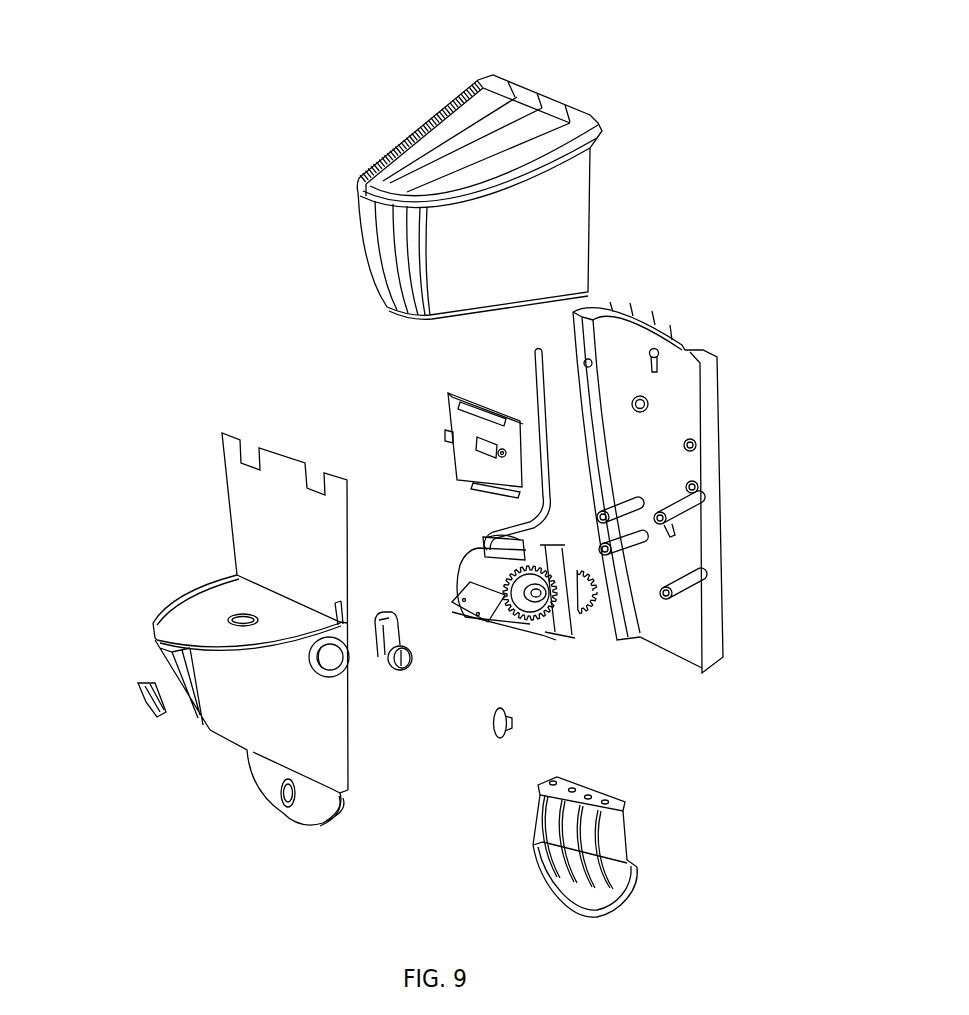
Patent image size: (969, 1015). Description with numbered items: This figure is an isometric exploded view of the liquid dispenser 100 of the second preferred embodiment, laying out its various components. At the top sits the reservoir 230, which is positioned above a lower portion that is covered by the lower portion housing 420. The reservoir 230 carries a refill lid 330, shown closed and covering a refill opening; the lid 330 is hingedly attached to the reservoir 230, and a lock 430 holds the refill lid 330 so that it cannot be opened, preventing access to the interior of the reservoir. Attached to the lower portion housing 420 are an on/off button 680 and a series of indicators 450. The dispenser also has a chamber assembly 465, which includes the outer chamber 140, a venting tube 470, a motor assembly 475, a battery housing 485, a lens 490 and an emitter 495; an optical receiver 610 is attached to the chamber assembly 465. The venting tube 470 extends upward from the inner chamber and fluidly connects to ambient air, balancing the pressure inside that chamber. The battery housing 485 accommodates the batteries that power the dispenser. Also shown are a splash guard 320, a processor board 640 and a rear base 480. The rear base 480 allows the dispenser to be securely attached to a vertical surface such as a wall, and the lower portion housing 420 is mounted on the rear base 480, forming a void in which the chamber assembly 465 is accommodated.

The liquid dispenser 100 is at (125, 255).
The outer chamber 140 is at (468, 568).
The reservoir 230 is at (378, 277).
The splash guard 320 is at (258, 777).
The refill lid 330 is at (481, 77).
The lower portion housing 420 is at (152, 632).
The lock 430 is at (414, 662).
The indicators 450 is at (177, 660).
The chamber assembly 465 is at (470, 528).
The venting tube 470 is at (558, 474).
The motor assembly 475 is at (562, 597).
The rear base 480 is at (704, 497).
The battery housing 485 is at (636, 866).
The lens 490 is at (512, 722).
The emitter 495 is at (512, 733).
The optical receiver 610 is at (478, 619).
The processor board 640 is at (529, 493).
The on/off button 680 is at (137, 687).